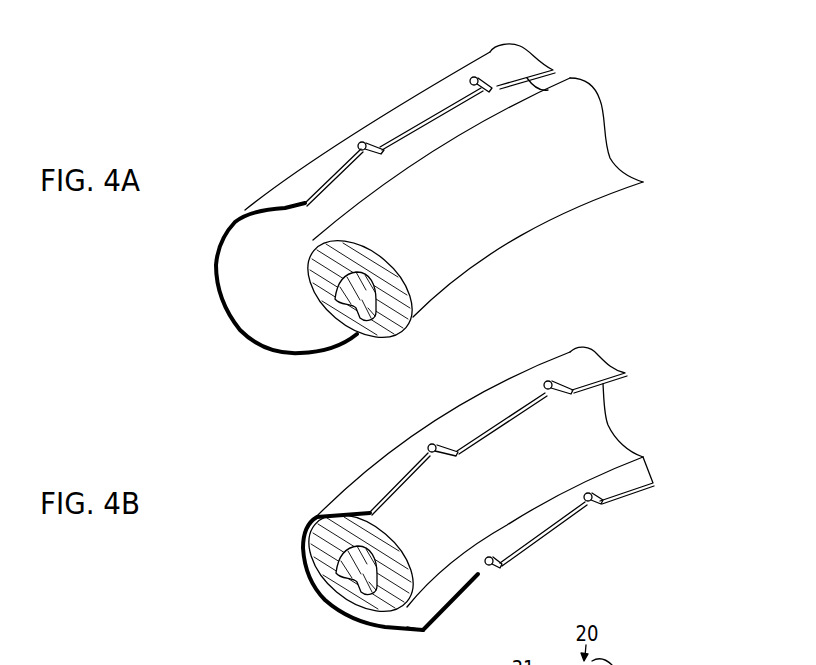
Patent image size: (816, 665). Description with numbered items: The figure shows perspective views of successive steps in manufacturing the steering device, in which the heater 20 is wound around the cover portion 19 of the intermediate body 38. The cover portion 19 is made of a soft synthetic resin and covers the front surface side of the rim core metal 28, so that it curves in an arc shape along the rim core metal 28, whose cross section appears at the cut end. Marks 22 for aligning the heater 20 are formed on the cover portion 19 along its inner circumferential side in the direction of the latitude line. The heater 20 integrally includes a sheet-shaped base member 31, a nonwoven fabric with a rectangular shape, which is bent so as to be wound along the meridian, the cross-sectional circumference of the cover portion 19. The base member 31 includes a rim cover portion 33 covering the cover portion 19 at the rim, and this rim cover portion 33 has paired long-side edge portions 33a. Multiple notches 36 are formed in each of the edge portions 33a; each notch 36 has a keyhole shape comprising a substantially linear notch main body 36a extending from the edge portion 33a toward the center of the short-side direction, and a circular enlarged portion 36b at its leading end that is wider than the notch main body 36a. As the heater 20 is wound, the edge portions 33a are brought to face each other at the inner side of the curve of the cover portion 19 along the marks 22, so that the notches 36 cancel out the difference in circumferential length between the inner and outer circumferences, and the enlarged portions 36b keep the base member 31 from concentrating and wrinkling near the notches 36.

In FIG. 4A, the cover portion 19 is at (405, 323).
In FIG. 4B, the cover portion 19 is at (397, 609).
In FIG. 4A, the heater 20 is at (493, 51).
In FIG. 4B, the heater 20 is at (571, 352).
In FIG. 4A, the marks 22 is at (581, 182).
In FIG. 4B, the marks 22 is at (580, 458).
In FIG. 4A, the rim core metal 28 is at (376, 326).
In FIG. 4B, the rim core metal 28 is at (379, 604).
In FIG. 4A, the base member 31 is at (432, 84).
In FIG. 4B, the base member 31 is at (494, 394).
In FIG. 4A, the rim cover portion 33 is at (300, 168).
In FIG. 4B, the rim cover portion 33 is at (372, 476).
In FIG. 4A, the edge portions 33a is at (529, 55).
In FIG. 4B, the edge portions 33a is at (590, 365).
In FIG. 4A, the notches 36 is at (412, 90).
In FIG. 4B, the notches 36 is at (433, 446).
In FIG. 4A, the notch main body 36a is at (376, 142).
In FIG. 4A, the enlarged portion 36b is at (360, 141).
In FIG. 4A, the intermediate body 38 is at (551, 214).
In FIG. 4B, the intermediate body 38 is at (547, 494).